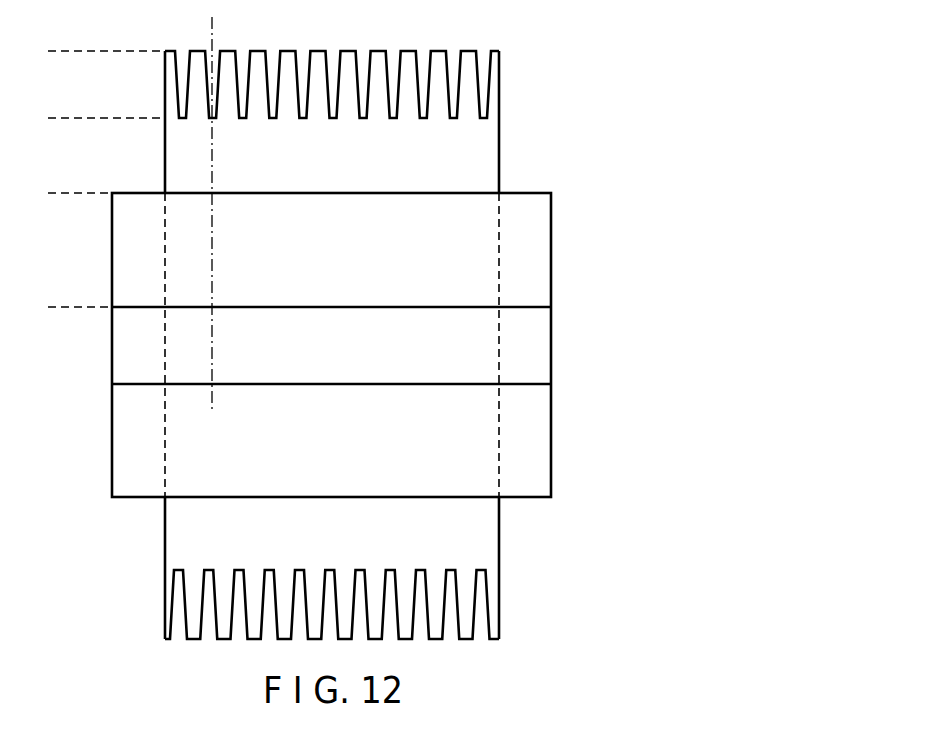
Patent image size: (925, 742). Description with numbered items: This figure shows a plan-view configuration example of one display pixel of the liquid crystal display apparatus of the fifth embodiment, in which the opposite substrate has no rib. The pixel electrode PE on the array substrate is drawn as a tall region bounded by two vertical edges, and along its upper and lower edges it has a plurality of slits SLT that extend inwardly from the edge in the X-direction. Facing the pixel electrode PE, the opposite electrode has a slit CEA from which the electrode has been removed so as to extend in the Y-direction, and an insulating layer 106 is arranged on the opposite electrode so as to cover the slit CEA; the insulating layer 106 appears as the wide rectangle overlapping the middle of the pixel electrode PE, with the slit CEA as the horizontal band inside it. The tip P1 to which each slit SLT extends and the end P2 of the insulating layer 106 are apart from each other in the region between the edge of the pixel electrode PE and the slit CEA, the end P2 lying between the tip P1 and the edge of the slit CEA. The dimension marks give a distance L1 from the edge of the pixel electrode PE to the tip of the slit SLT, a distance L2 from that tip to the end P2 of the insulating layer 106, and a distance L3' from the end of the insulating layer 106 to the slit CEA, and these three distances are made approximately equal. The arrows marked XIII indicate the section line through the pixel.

The insulating layer 106 is at (538, 240).
The slit CEA is at (538, 353).
The pixel electrode PE is at (499, 150).
The slit SLT is at (485, 91).
The tip of the slit SLT P1 is at (243, 119).
The end of the insulating layer P2 is at (147, 192).
The distance L1 is at (66, 51).
The distance L2 is at (66, 118).
The distance L3 L3' is at (72, 250).
The section line XIII is at (204, 28).